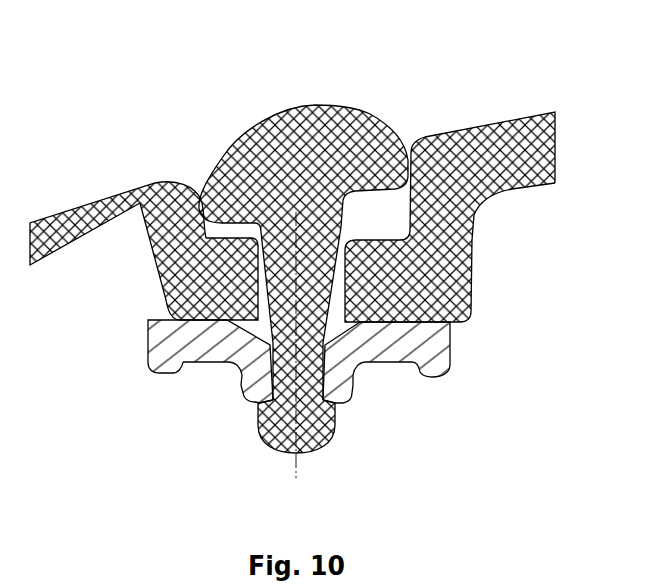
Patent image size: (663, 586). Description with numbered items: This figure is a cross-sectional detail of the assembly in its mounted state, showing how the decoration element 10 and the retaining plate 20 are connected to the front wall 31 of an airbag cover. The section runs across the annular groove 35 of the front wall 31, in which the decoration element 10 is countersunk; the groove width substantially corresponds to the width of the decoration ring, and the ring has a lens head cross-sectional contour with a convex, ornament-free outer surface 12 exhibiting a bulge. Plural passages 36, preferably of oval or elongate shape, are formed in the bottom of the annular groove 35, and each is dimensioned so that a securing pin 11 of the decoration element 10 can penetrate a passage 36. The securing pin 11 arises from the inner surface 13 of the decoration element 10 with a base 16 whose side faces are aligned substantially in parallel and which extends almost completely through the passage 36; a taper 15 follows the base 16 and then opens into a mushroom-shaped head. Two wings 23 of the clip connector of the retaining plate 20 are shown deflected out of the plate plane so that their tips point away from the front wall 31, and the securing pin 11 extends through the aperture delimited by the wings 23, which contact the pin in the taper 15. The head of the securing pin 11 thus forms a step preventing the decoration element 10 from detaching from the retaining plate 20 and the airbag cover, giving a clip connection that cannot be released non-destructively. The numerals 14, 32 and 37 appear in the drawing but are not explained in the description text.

The decoration element 10 is at (323, 272).
The securing pin 11 is at (322, 440).
The outer surface 12 is at (323, 100).
The inner surface 13 is at (236, 220).
The anchoring foot 14 is at (265, 425).
The taper 15 is at (233, 360).
The base 16 is at (473, 246).
The retaining plate 20 is at (324, 396).
The wings 23 is at (243, 393).
The front wall 31 is at (522, 116).
The underside of sealing lip 32 is at (523, 190).
The annular groove 35 is at (389, 224).
The passage 36 is at (447, 332).
The sealing lip 37 is at (97, 198).